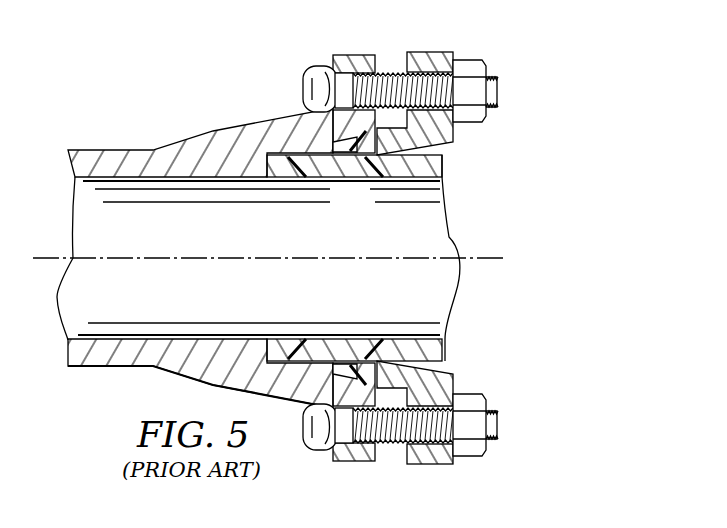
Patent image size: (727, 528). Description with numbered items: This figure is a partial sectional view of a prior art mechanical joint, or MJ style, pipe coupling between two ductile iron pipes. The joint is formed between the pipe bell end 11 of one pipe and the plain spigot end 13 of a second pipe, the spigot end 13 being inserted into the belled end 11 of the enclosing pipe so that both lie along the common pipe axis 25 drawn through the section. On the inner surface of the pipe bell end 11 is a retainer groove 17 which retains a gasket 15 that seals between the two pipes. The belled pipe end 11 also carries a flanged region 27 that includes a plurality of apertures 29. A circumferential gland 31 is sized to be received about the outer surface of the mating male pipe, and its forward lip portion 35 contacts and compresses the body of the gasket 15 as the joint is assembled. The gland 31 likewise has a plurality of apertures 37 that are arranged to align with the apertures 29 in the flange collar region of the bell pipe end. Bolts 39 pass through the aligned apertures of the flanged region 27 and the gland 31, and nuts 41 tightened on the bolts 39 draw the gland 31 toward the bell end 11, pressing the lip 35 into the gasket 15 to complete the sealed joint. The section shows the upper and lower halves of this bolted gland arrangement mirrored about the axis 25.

The pipe bell end 11 is at (187, 115).
The plain spigot end 13 is at (452, 160).
The gasket 15 is at (340, 138).
The retainer groove 17 is at (356, 152).
The central axis 25 is at (483, 258).
The flanged region 27 is at (355, 54).
The apertures 29 is at (334, 78).
The circumferential gland 31 is at (430, 53).
The forward lip portion 35 is at (352, 375).
The apertures 37 is at (410, 435).
The bolts 39 is at (386, 74).
The nuts 41 is at (468, 61).